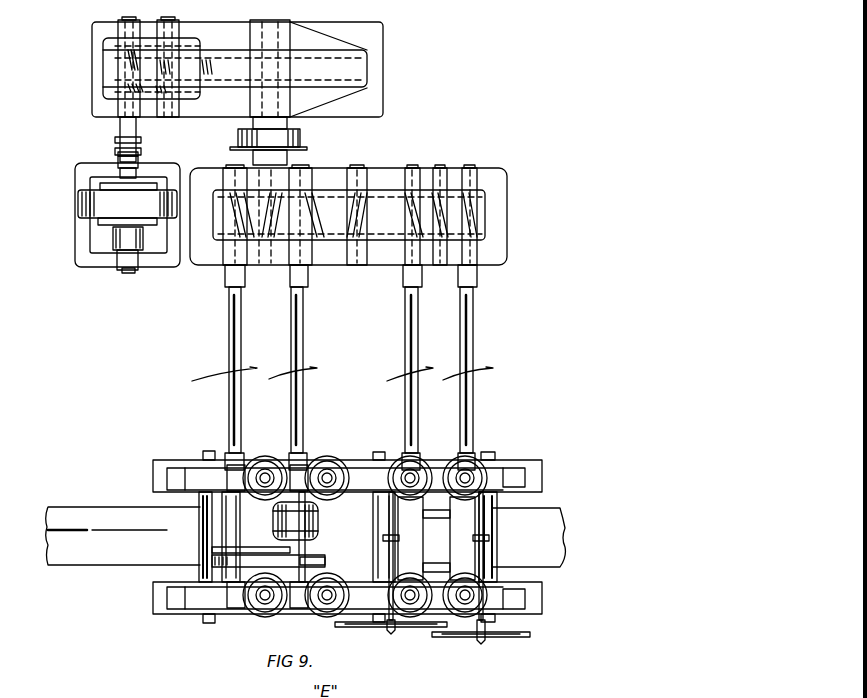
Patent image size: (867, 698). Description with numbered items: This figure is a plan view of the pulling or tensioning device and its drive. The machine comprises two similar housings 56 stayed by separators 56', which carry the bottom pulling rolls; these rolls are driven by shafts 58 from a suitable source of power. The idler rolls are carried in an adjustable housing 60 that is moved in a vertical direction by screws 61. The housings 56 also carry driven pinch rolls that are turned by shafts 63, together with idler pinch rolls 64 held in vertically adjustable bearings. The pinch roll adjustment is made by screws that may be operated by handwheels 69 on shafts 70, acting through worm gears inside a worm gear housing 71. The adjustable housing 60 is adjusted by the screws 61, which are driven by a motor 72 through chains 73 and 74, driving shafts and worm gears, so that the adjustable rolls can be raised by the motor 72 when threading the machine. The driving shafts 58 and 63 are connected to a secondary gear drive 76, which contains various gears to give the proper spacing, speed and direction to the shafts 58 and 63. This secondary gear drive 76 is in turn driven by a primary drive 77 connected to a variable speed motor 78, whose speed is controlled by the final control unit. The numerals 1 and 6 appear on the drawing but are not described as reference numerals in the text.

The centerline of conveyor 1 is at (107, 522).
The conveyor frame wall 6 is at (306, 537).
The housing 56 is at (341, 539).
The separator 56' is at (298, 543).
The shaft 58 is at (233, 426).
The adjustable housing 60 is at (287, 537).
The screw 61 is at (280, 444).
The shaft 63 is at (410, 423).
The idler pinch roll 64 is at (436, 538).
The handwheel 69 is at (432, 642).
The shaft 70 is at (487, 650).
The worm gear housing 71 is at (437, 536).
The motor 72 is at (317, 522).
The chain 73 is at (275, 548).
The chain 74 is at (268, 571).
The secondary gear drive 76 is at (488, 212).
The primary drive 77 is at (218, 97).
The variable speed motor 78 is at (127, 210).